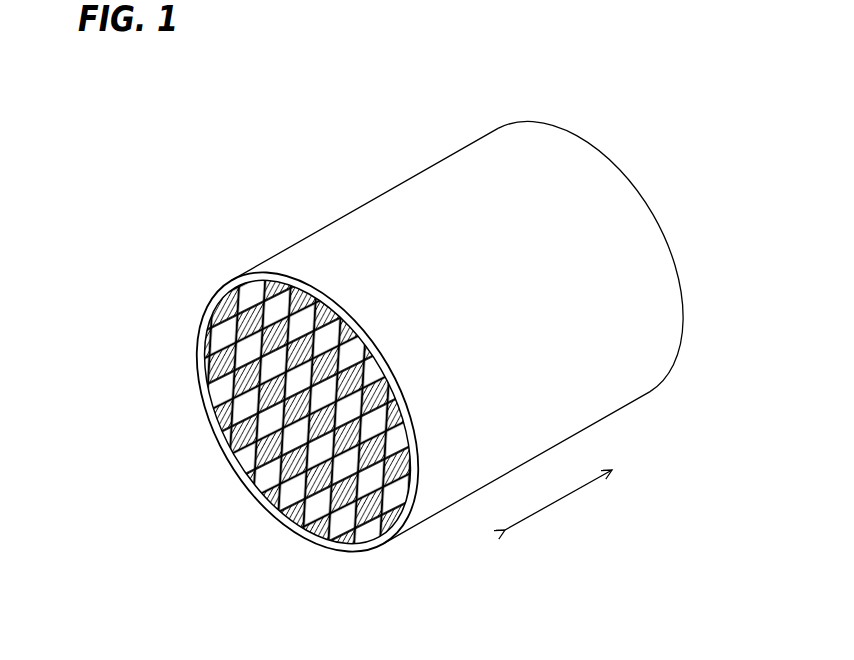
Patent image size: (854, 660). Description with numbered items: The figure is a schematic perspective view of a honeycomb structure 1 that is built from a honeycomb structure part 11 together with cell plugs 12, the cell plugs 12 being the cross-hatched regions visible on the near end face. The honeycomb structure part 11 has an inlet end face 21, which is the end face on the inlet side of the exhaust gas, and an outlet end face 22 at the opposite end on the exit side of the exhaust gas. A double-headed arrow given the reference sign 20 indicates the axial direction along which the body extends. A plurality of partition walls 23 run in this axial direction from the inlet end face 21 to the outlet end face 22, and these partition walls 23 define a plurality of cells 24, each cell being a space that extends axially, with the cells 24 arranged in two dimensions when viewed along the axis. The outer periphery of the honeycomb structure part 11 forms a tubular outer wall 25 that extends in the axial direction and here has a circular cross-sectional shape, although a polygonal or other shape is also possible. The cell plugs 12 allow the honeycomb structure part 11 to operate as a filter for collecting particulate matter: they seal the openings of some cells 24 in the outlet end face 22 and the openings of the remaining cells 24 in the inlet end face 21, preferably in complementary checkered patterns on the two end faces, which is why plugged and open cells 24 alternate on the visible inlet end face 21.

The honeycomb structure 1 is at (237, 135).
The honeycomb structure part 11 is at (375, 172).
The cell plugs 12 is at (235, 392).
The axial direction 20 is at (578, 490).
The inlet end face 21 is at (191, 449).
The outlet end face 22 is at (648, 160).
The partition walls 23 is at (213, 313).
The cells 24 is at (268, 347).
The tubular outer wall 25 is at (337, 235).